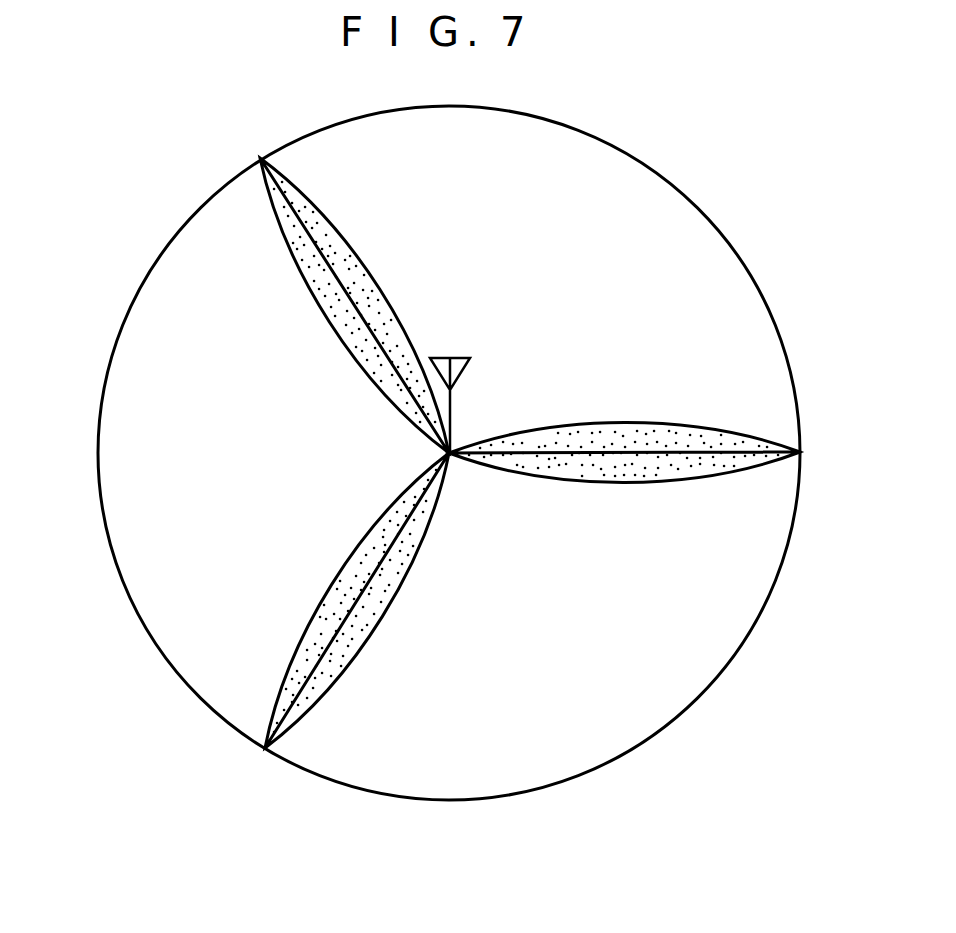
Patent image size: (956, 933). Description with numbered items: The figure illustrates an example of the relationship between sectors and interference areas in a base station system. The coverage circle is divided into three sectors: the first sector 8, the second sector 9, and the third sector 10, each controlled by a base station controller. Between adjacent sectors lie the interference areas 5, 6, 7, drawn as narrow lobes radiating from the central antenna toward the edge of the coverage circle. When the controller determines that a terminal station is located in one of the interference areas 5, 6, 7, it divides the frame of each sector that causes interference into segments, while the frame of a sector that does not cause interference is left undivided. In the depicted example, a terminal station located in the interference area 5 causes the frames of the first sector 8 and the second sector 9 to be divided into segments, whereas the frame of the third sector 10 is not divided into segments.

The interference area 5 is at (757, 430).
The interference area 6 is at (262, 203).
The interference area 7 is at (272, 705).
The sector 0 8 is at (607, 243).
The sector 1 9 is at (642, 608).
The sector 2 10 is at (148, 412).